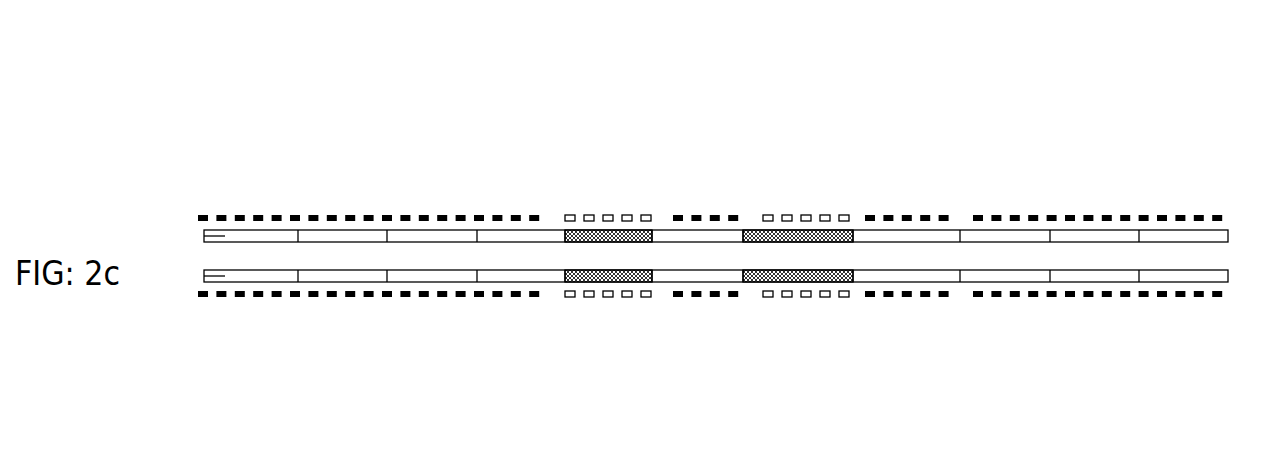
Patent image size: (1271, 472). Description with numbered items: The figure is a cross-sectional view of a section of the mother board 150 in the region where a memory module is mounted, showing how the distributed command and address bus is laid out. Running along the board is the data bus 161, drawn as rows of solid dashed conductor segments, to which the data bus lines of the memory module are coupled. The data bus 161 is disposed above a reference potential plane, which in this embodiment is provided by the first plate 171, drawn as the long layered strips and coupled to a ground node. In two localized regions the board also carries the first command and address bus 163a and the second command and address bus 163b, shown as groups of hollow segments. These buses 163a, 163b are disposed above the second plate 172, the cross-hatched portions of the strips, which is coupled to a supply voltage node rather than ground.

The mother board 150 is at (742, 115).
The data bus 161 is at (232, 217).
The first command and address bus 163a is at (632, 212).
The second command and address bus 163b is at (815, 212).
The first plate 171 is at (204, 236).
The second plate 172 is at (833, 232).